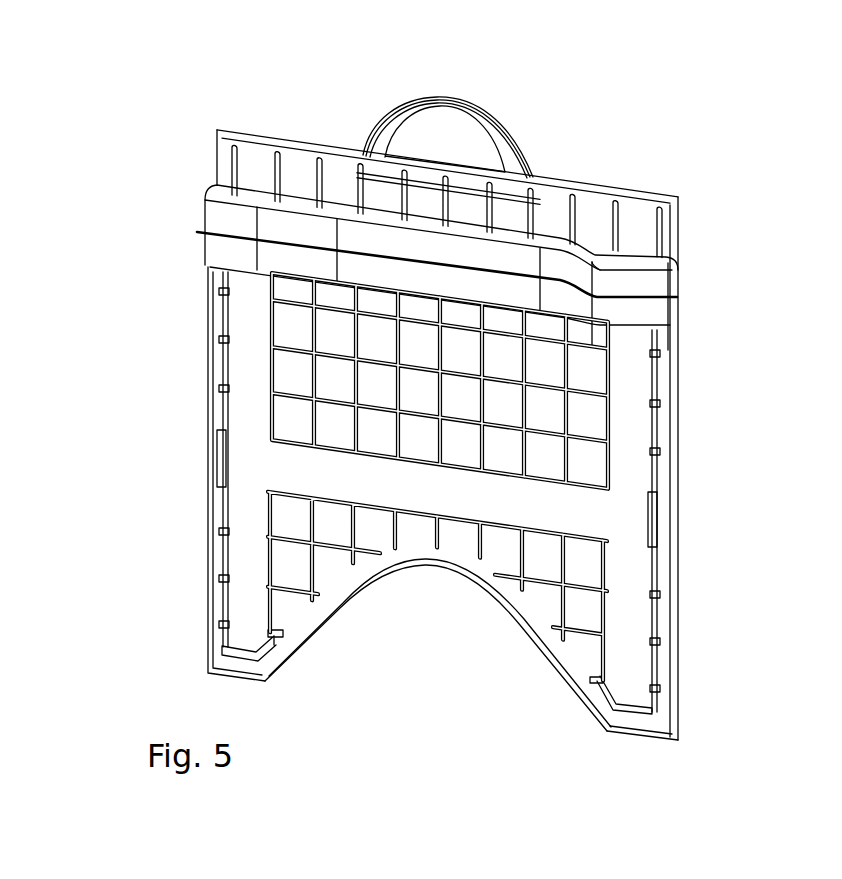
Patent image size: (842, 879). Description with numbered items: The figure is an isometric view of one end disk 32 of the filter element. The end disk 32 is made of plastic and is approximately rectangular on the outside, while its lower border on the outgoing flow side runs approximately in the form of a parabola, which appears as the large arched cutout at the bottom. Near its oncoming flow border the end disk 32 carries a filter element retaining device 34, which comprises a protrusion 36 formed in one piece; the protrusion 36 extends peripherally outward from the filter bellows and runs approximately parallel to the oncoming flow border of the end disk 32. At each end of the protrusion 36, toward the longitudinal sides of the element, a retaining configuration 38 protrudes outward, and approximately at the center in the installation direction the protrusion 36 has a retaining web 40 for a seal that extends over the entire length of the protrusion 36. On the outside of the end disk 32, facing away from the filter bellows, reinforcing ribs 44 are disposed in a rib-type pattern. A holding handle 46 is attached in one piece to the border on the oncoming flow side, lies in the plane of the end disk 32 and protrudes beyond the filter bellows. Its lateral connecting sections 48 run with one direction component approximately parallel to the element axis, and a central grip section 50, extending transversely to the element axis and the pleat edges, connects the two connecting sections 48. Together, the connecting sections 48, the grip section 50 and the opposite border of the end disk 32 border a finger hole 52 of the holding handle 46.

The end disk 32 is at (186, 112).
The filter element retaining device 34 is at (196, 205).
The protrusion 36 is at (548, 301).
The retaining configuration 38 is at (650, 281).
The retaining web 40 is at (677, 297).
The reinforcing ribs 44 is at (538, 582).
The holding handle 46 is at (510, 123).
The lateral connecting sections 48 is at (381, 130).
The central grip section 50 is at (448, 105).
The finger hole 52 is at (435, 130).